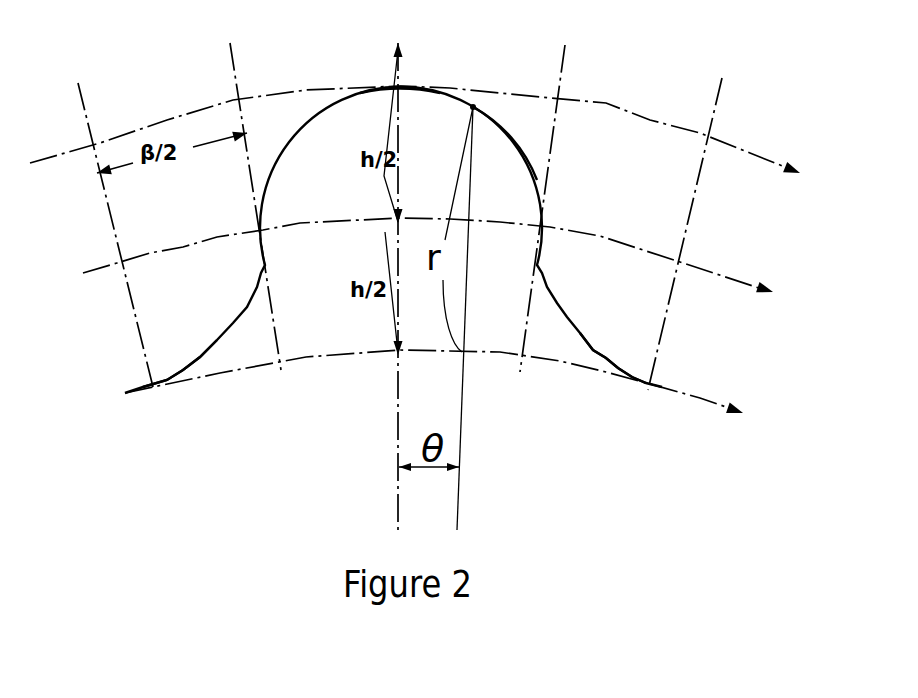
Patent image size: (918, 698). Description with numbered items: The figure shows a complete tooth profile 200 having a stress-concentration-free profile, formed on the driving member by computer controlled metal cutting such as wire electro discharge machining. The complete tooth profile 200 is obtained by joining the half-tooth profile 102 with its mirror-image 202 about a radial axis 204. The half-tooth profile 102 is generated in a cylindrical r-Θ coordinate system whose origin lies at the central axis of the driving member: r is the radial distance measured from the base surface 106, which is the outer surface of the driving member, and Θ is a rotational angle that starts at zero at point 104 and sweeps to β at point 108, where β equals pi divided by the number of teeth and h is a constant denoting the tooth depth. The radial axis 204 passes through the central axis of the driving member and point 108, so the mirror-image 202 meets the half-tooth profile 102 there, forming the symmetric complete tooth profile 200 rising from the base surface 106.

The half-tooth profile 102 is at (306, 124).
The point 104 is at (148, 387).
The base surface 106 is at (540, 363).
The point 108 is at (392, 85).
The complete tooth profile 200 is at (578, 177).
The mirror-image 202 is at (507, 133).
The radial axis 204 is at (400, 43).